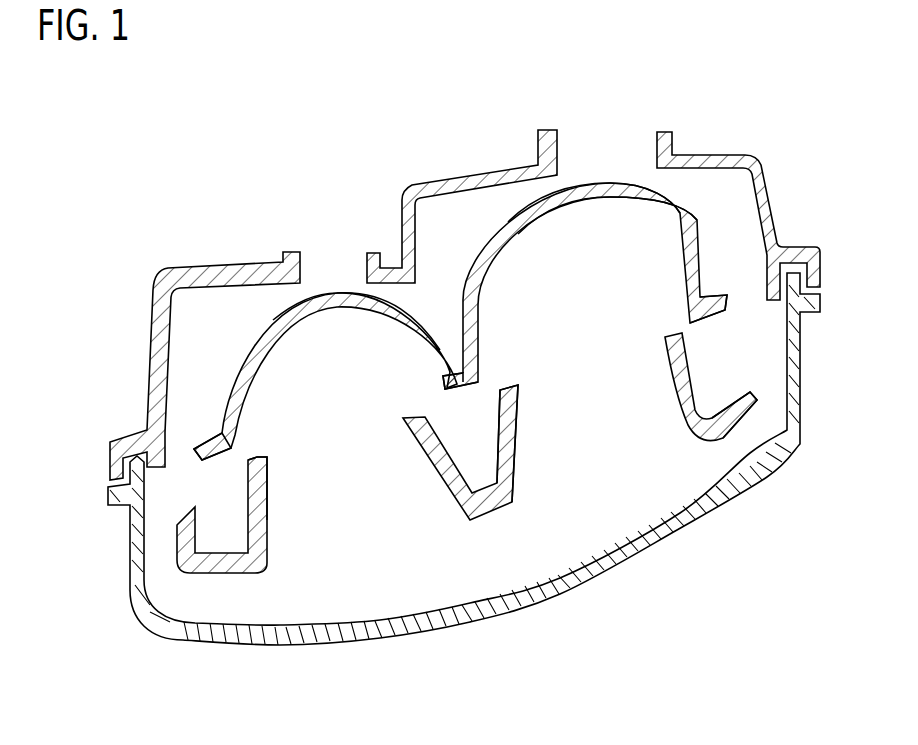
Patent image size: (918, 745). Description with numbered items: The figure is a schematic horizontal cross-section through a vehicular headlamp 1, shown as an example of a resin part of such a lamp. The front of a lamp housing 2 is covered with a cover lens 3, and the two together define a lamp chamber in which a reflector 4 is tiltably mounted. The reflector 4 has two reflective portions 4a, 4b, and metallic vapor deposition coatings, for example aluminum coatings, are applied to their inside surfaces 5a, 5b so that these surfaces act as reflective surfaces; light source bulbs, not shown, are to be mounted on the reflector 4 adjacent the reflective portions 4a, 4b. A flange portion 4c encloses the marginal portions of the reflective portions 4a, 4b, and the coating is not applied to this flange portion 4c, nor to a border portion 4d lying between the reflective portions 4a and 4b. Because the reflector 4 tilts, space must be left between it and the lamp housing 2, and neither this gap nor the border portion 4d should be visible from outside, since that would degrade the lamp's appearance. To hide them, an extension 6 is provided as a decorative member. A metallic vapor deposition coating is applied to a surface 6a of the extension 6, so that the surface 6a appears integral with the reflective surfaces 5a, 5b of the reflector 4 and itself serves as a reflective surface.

The battery pack / case assembly 1 is at (720, 552).
The lamp housing 2 is at (208, 263).
The cover lens 3 is at (593, 587).
The reflector 4 is at (502, 227).
The reflective portion 4a is at (610, 181).
The reflective portion 4b is at (333, 293).
The flange portion 4c is at (200, 440).
The border portion 4d is at (470, 386).
The inside surface 5a is at (583, 207).
The inside surface 5b is at (308, 318).
The extension 6 is at (483, 517).
The surface 6a is at (268, 533).